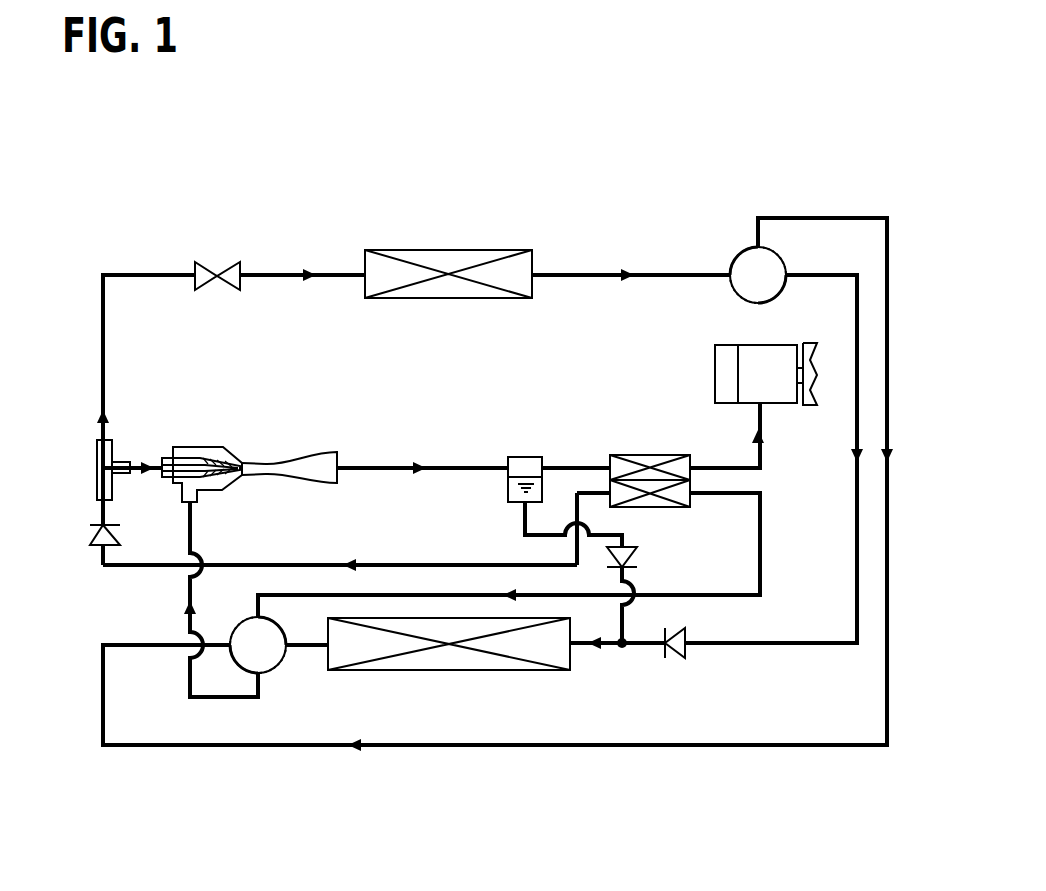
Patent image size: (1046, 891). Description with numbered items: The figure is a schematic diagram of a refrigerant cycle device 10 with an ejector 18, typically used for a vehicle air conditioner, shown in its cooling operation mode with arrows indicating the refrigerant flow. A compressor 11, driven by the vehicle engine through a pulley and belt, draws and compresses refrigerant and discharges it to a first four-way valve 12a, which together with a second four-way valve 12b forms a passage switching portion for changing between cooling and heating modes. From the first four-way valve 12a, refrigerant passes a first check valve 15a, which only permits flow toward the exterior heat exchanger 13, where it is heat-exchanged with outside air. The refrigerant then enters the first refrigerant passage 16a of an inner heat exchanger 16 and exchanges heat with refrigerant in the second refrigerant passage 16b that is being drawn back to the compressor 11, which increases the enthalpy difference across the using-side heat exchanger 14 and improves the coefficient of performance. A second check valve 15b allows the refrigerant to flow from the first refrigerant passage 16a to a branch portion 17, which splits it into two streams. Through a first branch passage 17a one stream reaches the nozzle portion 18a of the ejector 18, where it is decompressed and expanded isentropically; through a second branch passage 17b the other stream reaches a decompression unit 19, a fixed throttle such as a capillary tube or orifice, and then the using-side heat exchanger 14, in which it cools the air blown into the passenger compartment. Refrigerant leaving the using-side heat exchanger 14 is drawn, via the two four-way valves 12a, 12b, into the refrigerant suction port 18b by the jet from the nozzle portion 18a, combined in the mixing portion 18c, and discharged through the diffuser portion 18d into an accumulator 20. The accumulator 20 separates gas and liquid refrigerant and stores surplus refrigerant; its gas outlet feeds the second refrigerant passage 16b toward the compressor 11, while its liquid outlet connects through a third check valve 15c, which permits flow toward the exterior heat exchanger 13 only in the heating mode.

The refrigerant cycle device 10 is at (660, 221).
The compressor 11 is at (775, 405).
The first four-way valve 12a is at (786, 252).
The second four-way valve 12b is at (277, 668).
The exterior heat exchanger 13 is at (455, 670).
The using-side heat exchanger 14 is at (447, 250).
The first check valve 15a is at (687, 657).
The second check valve 15b is at (90, 535).
The third check valve 15c is at (637, 558).
The inner heat exchanger 16 is at (653, 458).
The first refrigerant passage 16a is at (650, 508).
The second refrigerant passage 16b is at (650, 455).
The branch portion 17 is at (103, 437).
The first branch passage 17a is at (153, 457).
The second branch passage 17b is at (100, 395).
The ejector 18 is at (235, 456).
The nozzle portion 18a is at (203, 452).
The refrigerant suction port 18b is at (183, 500).
The mixing portion 18c is at (253, 470).
The diffuser portion 18d is at (297, 470).
The decompression unit 19 is at (224, 292).
The accumulator 20 is at (533, 455).